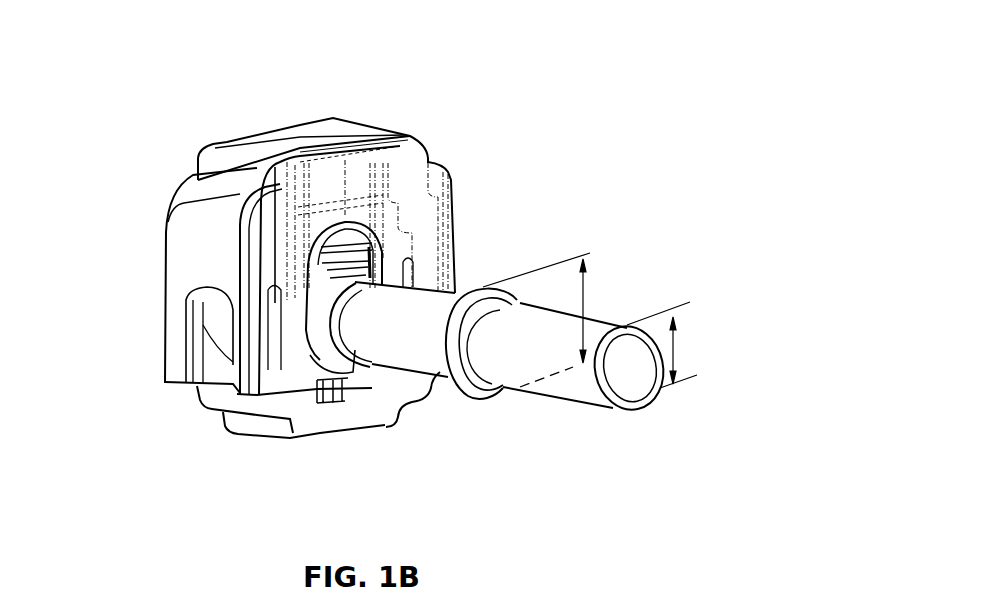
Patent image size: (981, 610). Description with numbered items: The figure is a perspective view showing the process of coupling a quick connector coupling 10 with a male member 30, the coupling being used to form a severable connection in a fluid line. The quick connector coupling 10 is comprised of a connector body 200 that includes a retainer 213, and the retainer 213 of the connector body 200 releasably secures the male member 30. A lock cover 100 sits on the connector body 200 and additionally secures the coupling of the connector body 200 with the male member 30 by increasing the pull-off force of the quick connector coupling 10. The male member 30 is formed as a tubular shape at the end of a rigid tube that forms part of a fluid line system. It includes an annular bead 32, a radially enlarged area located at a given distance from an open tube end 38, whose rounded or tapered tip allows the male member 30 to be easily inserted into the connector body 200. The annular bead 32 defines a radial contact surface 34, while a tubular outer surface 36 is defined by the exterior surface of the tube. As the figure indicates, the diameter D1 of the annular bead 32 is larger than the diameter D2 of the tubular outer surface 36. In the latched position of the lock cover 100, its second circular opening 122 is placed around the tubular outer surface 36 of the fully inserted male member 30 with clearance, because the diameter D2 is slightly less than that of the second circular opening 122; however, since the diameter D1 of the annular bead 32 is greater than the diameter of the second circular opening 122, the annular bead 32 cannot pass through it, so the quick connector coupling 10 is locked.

The quick connector coupling 10 is at (225, 90).
The lock cover 100 is at (393, 123).
The second circular opening 122 is at (330, 230).
The connector body 200 is at (251, 433).
The retainer 213 is at (323, 381).
The open tube end 38 is at (353, 330).
The male member 30 is at (654, 432).
The annular bead 32 is at (483, 286).
The radial contact surface 34 is at (478, 388).
The tubular outer surface 36 is at (570, 392).
The diameter of the annular bead D1 is at (551, 308).
The diameter of the tubular outer surface D2 is at (672, 345).